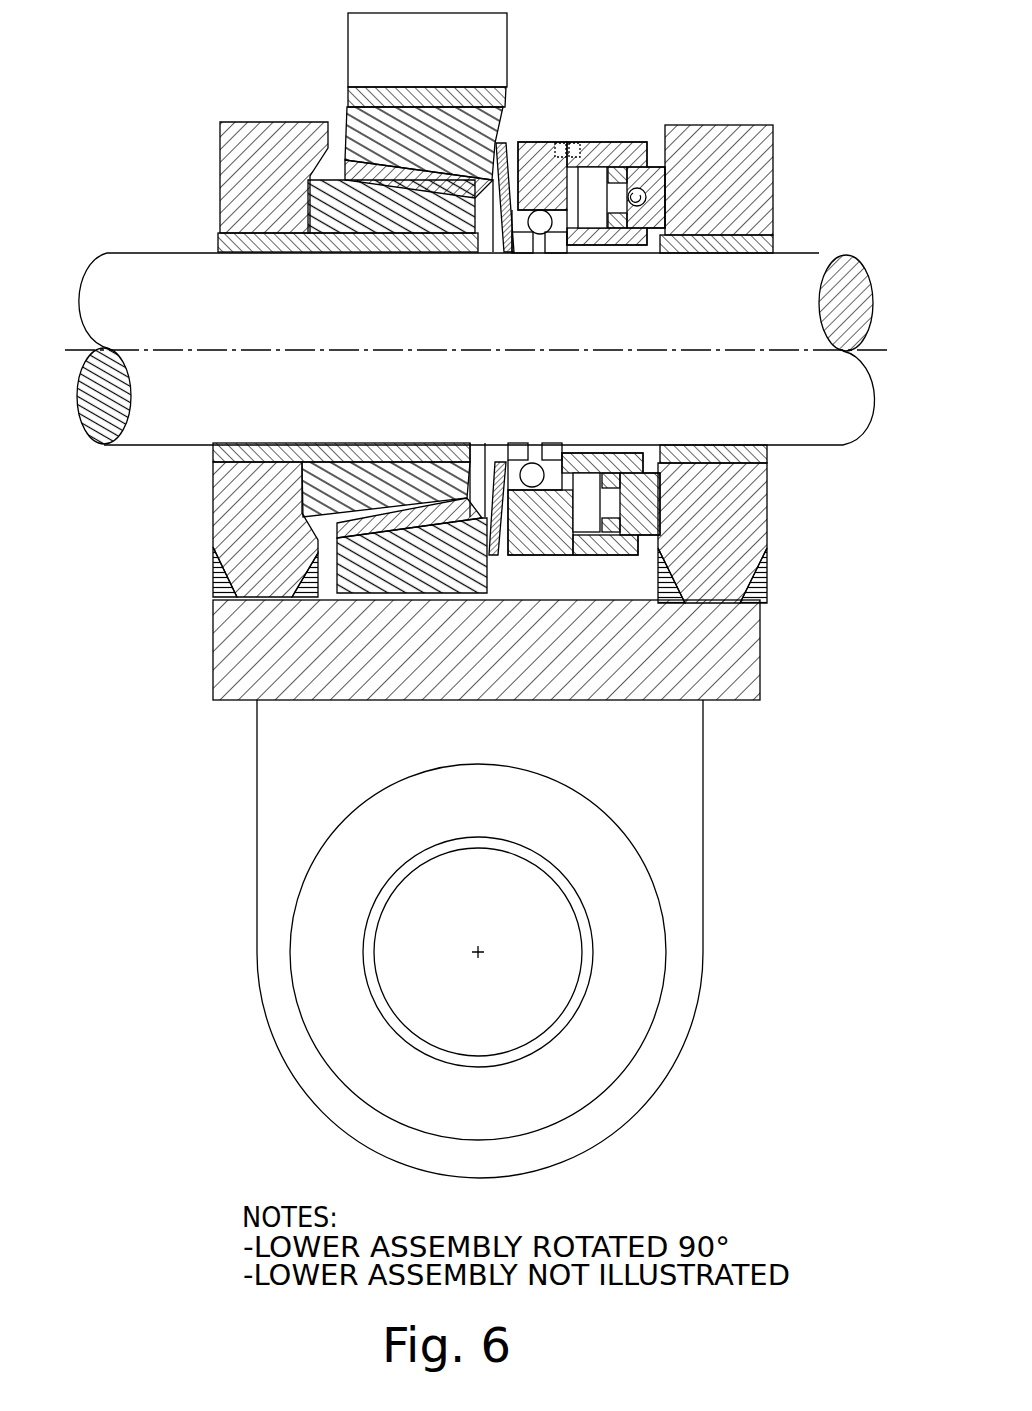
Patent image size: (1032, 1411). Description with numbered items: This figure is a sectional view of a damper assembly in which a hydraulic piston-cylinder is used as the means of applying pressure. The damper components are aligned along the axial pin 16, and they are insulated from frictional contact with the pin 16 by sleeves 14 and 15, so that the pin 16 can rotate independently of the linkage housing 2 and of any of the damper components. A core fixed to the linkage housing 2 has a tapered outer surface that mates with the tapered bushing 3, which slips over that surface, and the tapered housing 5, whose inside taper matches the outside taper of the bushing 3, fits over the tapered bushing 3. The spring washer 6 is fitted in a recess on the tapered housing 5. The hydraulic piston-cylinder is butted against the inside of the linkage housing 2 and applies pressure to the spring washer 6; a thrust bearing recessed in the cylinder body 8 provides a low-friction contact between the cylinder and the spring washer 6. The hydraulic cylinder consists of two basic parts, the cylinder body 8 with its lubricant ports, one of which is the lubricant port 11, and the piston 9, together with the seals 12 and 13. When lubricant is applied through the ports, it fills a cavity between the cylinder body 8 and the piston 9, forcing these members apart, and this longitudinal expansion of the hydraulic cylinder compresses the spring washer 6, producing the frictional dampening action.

The linkage housing 2 is at (268, 115).
The tapered bushing 3 is at (345, 143).
The tapered housing 5 is at (347, 110).
The spring washer 6 is at (507, 143).
The cylinder body 8 is at (625, 138).
The piston 9 is at (637, 197).
The lubricant port 11 is at (568, 138).
The seal 12 is at (603, 485).
The seal 13 is at (609, 532).
The sleeve 14 is at (778, 238).
The sleeve 15 is at (215, 237).
The axial pin 16 is at (167, 248).